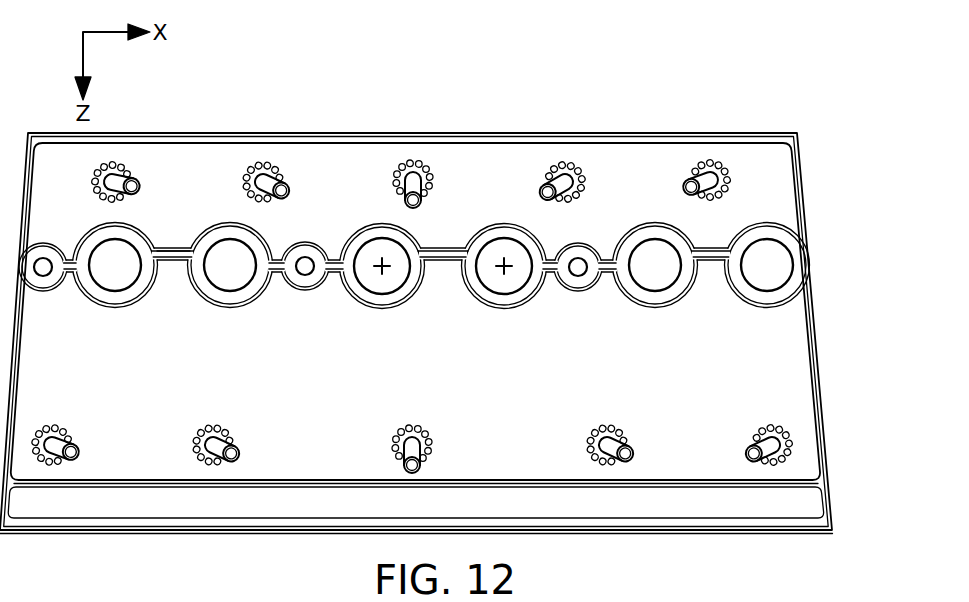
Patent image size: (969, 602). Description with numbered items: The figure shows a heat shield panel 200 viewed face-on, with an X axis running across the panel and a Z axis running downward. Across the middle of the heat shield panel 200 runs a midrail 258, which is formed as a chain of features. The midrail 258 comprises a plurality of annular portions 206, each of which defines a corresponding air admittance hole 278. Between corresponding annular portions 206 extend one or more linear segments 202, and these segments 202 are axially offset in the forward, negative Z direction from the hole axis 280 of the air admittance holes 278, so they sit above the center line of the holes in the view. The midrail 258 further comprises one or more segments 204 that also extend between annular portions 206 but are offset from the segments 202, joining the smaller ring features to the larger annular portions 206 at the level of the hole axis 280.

The heat shield panel 200 is at (653, 92).
The segment 202 is at (157, 249).
The segment 204 is at (610, 257).
The annular portion 206 is at (110, 302).
The midrail 258 is at (170, 250).
The air admittance hole 278 is at (380, 293).
The hole axis 280 is at (500, 270).